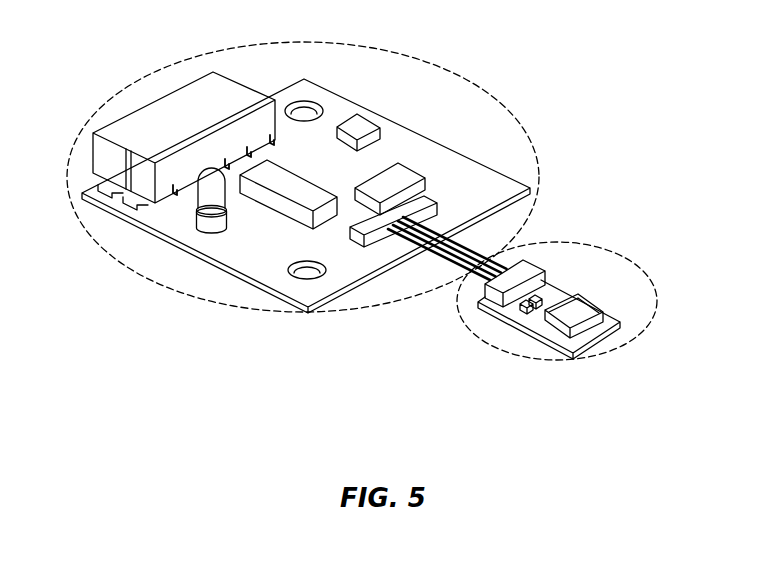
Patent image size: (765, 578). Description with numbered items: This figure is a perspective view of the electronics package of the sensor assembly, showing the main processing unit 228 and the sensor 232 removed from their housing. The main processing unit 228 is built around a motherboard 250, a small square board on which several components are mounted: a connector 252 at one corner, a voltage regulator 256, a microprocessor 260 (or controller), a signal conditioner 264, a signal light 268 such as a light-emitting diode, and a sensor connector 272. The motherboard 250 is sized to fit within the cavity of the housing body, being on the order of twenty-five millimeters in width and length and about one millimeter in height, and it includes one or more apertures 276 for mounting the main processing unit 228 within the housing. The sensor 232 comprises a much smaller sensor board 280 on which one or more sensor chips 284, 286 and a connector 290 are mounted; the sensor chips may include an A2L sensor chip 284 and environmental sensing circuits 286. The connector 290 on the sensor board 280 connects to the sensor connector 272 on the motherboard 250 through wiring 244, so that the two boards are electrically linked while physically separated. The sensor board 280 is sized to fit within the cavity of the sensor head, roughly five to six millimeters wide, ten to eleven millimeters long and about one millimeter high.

The main processing unit 228 is at (297, 42).
The sensor 232 is at (632, 254).
The wiring 244 is at (428, 260).
The motherboard 250 is at (167, 243).
The connector 252 is at (105, 155).
The voltage regulator 256 is at (368, 125).
The microprocessor 260 is at (427, 178).
The signal conditioner 264 is at (252, 193).
The signal light 268 is at (217, 224).
The sensor connector 272 is at (357, 240).
The aperture 276 is at (310, 270).
The sensor board 280 is at (573, 357).
The A2L sensor chip 284 is at (583, 308).
The environmental sensing circuits 286 is at (528, 314).
The connector 290 is at (525, 265).